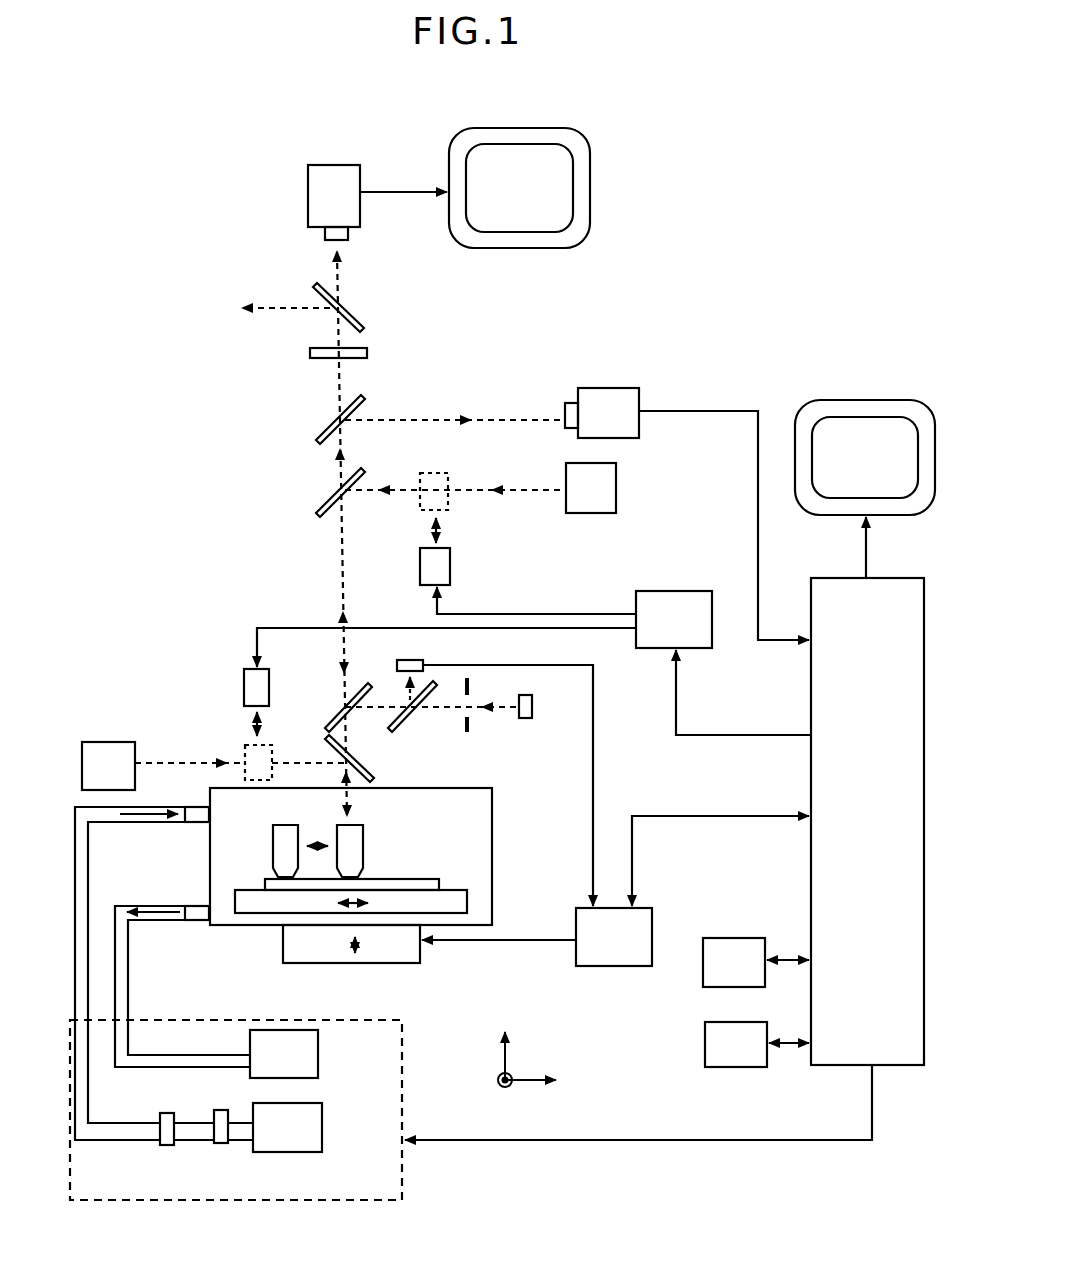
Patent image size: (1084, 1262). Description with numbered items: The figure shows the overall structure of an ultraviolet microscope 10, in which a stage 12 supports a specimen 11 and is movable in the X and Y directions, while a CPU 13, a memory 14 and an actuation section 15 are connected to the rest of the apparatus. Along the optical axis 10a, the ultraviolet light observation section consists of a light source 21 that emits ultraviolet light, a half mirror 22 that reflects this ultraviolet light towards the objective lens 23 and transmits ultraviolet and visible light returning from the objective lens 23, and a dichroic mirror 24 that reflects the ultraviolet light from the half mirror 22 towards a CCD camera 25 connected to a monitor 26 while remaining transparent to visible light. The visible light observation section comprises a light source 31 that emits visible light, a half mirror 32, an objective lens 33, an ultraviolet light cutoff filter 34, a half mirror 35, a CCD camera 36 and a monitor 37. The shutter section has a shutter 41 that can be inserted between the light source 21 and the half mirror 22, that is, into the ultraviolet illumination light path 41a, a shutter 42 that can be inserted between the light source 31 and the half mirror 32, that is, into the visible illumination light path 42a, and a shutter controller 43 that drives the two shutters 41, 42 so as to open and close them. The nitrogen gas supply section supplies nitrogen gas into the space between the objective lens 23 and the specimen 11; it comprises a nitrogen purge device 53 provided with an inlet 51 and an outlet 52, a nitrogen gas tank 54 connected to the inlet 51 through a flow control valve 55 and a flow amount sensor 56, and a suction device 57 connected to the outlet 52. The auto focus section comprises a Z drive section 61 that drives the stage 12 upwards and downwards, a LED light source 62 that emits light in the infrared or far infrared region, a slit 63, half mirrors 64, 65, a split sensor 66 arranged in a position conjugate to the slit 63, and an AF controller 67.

The ultraviolet microscope 10 is at (124, 103).
The optical axis 10a is at (337, 557).
The specimen 11 is at (401, 879).
The stage 12 is at (457, 890).
The CPU 13 is at (811, 773).
The memory 14 is at (735, 938).
The actuation section 15 is at (737, 1068).
The light source 21 is at (616, 476).
The half mirror 22 is at (318, 495).
The objective lens 23 is at (365, 818).
The dichroic mirror 24 is at (318, 425).
The CCD camera 25 is at (605, 388).
The monitor 26 is at (858, 400).
The light source 31 is at (110, 742).
The half mirror 32 is at (372, 772).
The objective lens 33 is at (273, 822).
The ultraviolet light cutoff filter 34 is at (310, 354).
The half mirror 35 is at (352, 314).
The CCD camera 36 is at (329, 165).
The monitor 37 is at (590, 166).
The shutter 41 is at (450, 565).
The ultraviolet illumination light path 41a is at (520, 493).
The shutter 42 is at (244, 690).
The visible illumination light path 42a is at (158, 760).
The shutter controller 43 is at (662, 591).
The inlet 51 is at (197, 822).
The outlet 52 is at (198, 921).
The nitrogen purge device 53 is at (240, 928).
The nitrogen gas tank 54 is at (322, 1129).
The flow control valve 55 is at (222, 1145).
The flow amount sensor 56 is at (167, 1147).
The suction device 57 is at (318, 1053).
The Z drive section 61 is at (340, 963).
The LED light source 62 is at (532, 701).
The slit 63 is at (470, 730).
The half mirror 64 is at (395, 733).
The half mirror 65 is at (332, 718).
The split sensor 66 is at (402, 660).
The AF controller 67 is at (612, 966).